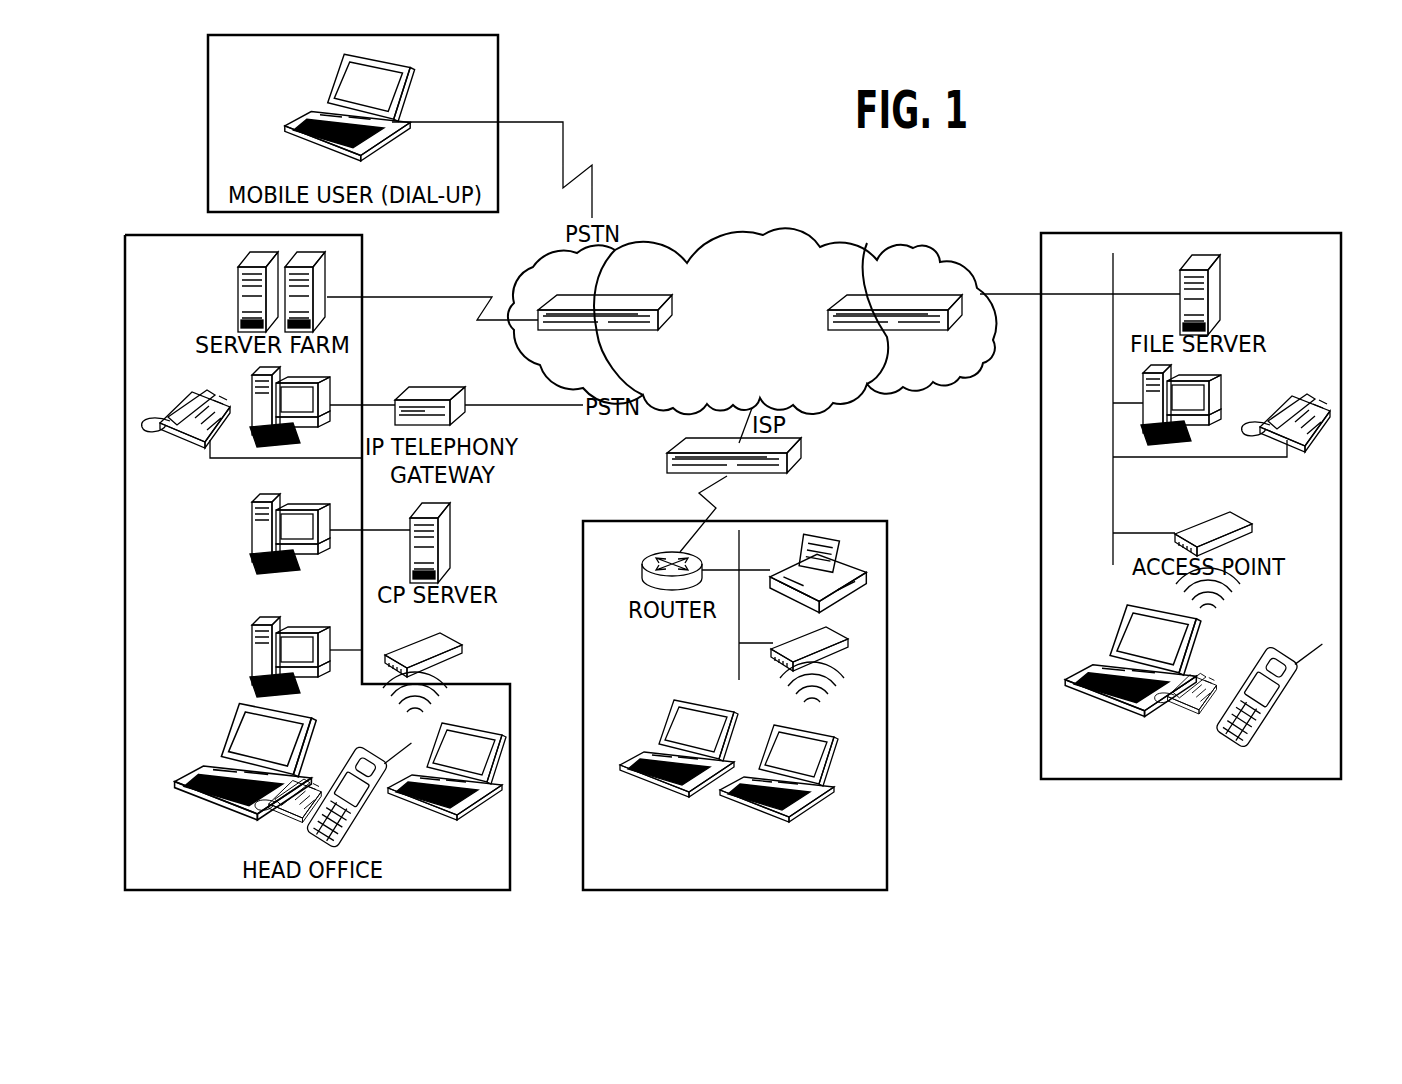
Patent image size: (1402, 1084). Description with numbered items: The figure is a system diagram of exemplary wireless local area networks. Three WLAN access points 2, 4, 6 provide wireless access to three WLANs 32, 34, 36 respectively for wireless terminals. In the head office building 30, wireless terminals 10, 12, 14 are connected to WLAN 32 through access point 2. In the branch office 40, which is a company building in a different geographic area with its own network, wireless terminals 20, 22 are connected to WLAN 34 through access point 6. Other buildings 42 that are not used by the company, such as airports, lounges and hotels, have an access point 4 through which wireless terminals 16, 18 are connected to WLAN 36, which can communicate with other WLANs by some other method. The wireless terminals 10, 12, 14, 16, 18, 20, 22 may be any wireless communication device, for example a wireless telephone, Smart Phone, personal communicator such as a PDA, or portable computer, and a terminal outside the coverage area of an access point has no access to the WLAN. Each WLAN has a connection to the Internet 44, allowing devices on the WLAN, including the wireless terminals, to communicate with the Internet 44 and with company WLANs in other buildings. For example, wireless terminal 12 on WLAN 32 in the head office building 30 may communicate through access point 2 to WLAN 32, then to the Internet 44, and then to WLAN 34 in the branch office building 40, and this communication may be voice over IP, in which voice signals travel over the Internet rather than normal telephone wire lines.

The WLAN access point 2 is at (455, 650).
The WLAN access point 4 is at (830, 648).
The WLAN access point 6 is at (1228, 545).
The wireless terminal 10 is at (225, 800).
The wireless terminal 12 is at (363, 820).
The wireless terminal 14 is at (500, 783).
The wireless terminal 16 is at (663, 718).
The wireless terminal 18 is at (813, 778).
The wireless terminal 20 is at (1087, 697).
The wireless terminal 22 is at (1283, 700).
The head office building 30 is at (125, 330).
The WLAN 32 is at (355, 597).
The WLAN 34 is at (1123, 483).
The WLAN 36 is at (745, 547).
The branch office 40 is at (1277, 782).
The other buildings 42 is at (887, 827).
The Internet 44 is at (687, 250).